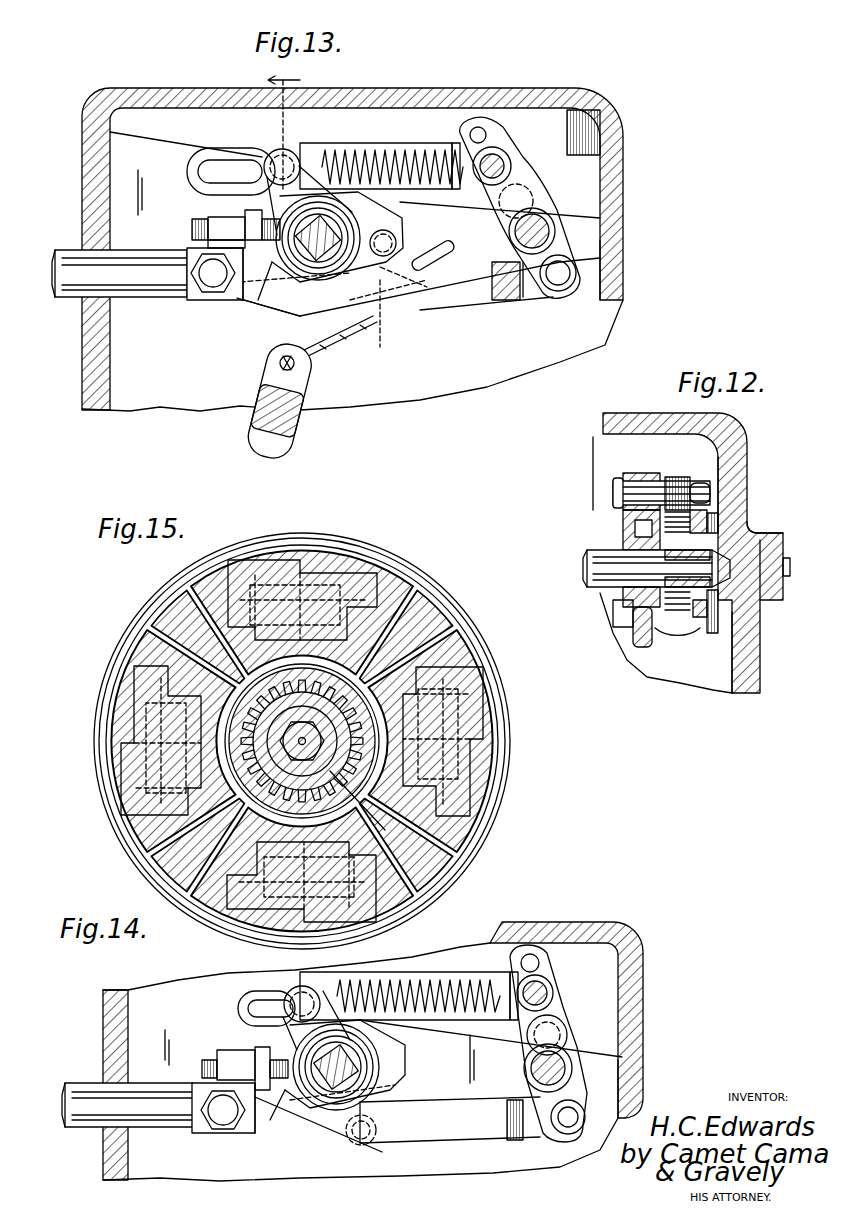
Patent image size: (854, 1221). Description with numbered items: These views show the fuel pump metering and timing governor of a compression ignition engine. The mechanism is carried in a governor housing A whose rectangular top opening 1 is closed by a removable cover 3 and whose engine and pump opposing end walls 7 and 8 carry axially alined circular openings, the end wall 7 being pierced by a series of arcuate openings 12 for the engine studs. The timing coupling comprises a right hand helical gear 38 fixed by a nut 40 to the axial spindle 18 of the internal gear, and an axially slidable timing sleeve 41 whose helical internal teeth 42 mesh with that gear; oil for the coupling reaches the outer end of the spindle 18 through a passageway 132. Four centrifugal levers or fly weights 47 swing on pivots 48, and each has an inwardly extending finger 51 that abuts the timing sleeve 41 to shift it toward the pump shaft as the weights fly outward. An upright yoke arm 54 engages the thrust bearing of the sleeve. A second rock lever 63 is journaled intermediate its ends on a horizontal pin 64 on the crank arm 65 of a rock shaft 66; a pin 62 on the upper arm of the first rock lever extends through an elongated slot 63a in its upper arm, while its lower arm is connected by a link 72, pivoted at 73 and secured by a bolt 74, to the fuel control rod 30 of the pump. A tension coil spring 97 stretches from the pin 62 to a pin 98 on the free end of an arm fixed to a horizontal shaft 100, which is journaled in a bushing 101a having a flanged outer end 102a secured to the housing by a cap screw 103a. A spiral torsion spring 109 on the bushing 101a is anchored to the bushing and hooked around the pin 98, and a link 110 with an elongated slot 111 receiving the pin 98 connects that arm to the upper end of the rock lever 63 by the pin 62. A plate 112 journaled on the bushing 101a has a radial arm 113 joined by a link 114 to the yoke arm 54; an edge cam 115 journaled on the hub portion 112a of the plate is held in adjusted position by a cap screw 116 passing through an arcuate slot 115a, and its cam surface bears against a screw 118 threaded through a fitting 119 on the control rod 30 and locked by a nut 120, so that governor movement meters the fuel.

In FIG. 13, the top opening 1 is at (590, 217).
In FIG. 12, the top opening 1 is at (720, 485).
In FIG. 14, the top opening 1 is at (607, 1057).
In FIG. 13, the removable cover 3 is at (205, 90).
In FIG. 12, the removable cover 3 is at (747, 460).
In FIG. 14, the removable cover 3 is at (613, 932).
In FIG. 13, the engine opposing end wall 7 is at (623, 292).
In FIG. 14, the engine opposing end wall 7 is at (643, 1073).
In FIG. 13, the pump opposing end wall 8 is at (86, 368).
In FIG. 14, the pump opposing end wall 8 is at (105, 1053).
In FIG. 13, the arcuate openings 12 is at (350, 337).
In FIG. 15, the axial spindle 18 is at (405, 770).
In FIG. 13, the fuel control rod 30 is at (137, 297).
In FIG. 14, the fuel control rod 30 is at (92, 1127).
In FIG. 15, the right hand helical gear 38 is at (478, 832).
In FIG. 15, the nut 40 is at (495, 813).
In FIG. 15, the timing sleeve 41 is at (372, 700).
In FIG. 15, the internal teeth 42 is at (385, 830).
In FIG. 15, the centrifugal levers 47 is at (437, 605).
In FIG. 15, the pivots 48 is at (289, 560).
In FIG. 15, the finger 51 is at (323, 560).
In FIG. 13, the yoke arm 54 is at (320, 400).
In FIG. 13, the horizontal pin 62 is at (503, 162).
In FIG. 14, the horizontal pin 62 is at (548, 990).
In FIG. 13, the second rock lever 63 is at (527, 180).
In FIG. 14, the second rock lever 63 is at (578, 1092).
In FIG. 13, the elongated slot 63a is at (478, 127).
In FIG. 14, the elongated slot 63a is at (539, 963).
In FIG. 13, the horizontal pin 64 is at (500, 206).
In FIG. 14, the horizontal pin 64 is at (570, 1033).
In FIG. 13, the crank arm 65 is at (510, 224).
In FIG. 13, the rock shaft 66 is at (515, 243).
In FIG. 14, the rock shaft 66 is at (530, 1073).
In FIG. 13, the link 72 is at (232, 335).
In FIG. 12, the link 72 is at (640, 648).
In FIG. 14, the link 72 is at (307, 1147).
In FIG. 13, the pivot 73 is at (576, 273).
In FIG. 14, the pivot 73 is at (563, 1128).
In FIG. 13, the bolt 74 is at (213, 288).
In FIG. 14, the bolt 74 is at (223, 1125).
In FIG. 13, the tension coil spring 97 is at (407, 150).
In FIG. 12, the tension coil spring 97 is at (677, 477).
In FIG. 14, the tension coil spring 97 is at (440, 968).
In FIG. 13, the pin 98 is at (286, 158).
In FIG. 12, the pin 98 is at (712, 493).
In FIG. 14, the pin 98 is at (307, 998).
In FIG. 13, the horizontal shaft 100 is at (323, 263).
In FIG. 12, the horizontal shaft 100 is at (607, 553).
In FIG. 14, the horizontal shaft 100 is at (382, 1063).
In FIG. 12, the bushing 101a is at (763, 580).
In FIG. 12, the flanged outer end 102a is at (773, 533).
In FIG. 12, the cap screw 103a is at (790, 563).
In FIG. 13, the spiral torsion spring 109 is at (290, 268).
In FIG. 12, the spiral torsion spring 109 is at (670, 468).
In FIG. 13, the link 110 is at (370, 143).
In FIG. 12, the link 110 is at (645, 475).
In FIG. 14, the link 110 is at (240, 990).
In FIG. 13, the elongated slot 111 is at (238, 160).
In FIG. 12, the elongated slot 111 is at (613, 490).
In FIG. 14, the elongated slot 111 is at (250, 1000).
In FIG. 13, the plate 112 is at (393, 213).
In FIG. 12, the plate 112 is at (720, 602).
In FIG. 14, the plate 112 is at (393, 1045).
In FIG. 12, the hub portion 112a is at (720, 537).
In FIG. 13, the radially extending arm 113 is at (440, 233).
In FIG. 14, the radially extending arm 113 is at (403, 1163).
In FIG. 13, the link 114 is at (337, 343).
In FIG. 13, the edge cam 115 is at (270, 300).
In FIG. 12, the edge cam 115 is at (697, 617).
In FIG. 14, the edge cam 115 is at (305, 1097).
In FIG. 13, the arcuate slot 115a is at (400, 323).
In FIG. 14, the arcuate slot 115a is at (393, 1103).
In FIG. 13, the cap screw 116 is at (393, 267).
In FIG. 14, the cap screw 116 is at (395, 1128).
In FIG. 13, the screw 118 is at (192, 228).
In FIG. 14, the screw 118 is at (290, 1063).
In FIG. 13, the fitting 119 is at (213, 217).
In FIG. 14, the fitting 119 is at (228, 1050).
In FIG. 13, the nut 120 is at (245, 303).
In FIG. 14, the nut 120 is at (262, 1070).
In FIG. 15, the passageway 132 is at (240, 745).
In FIG. 13, the governor housing A is at (607, 258).
In FIG. 12, the governor housing A is at (760, 642).
In FIG. 14, the governor housing A is at (157, 990).